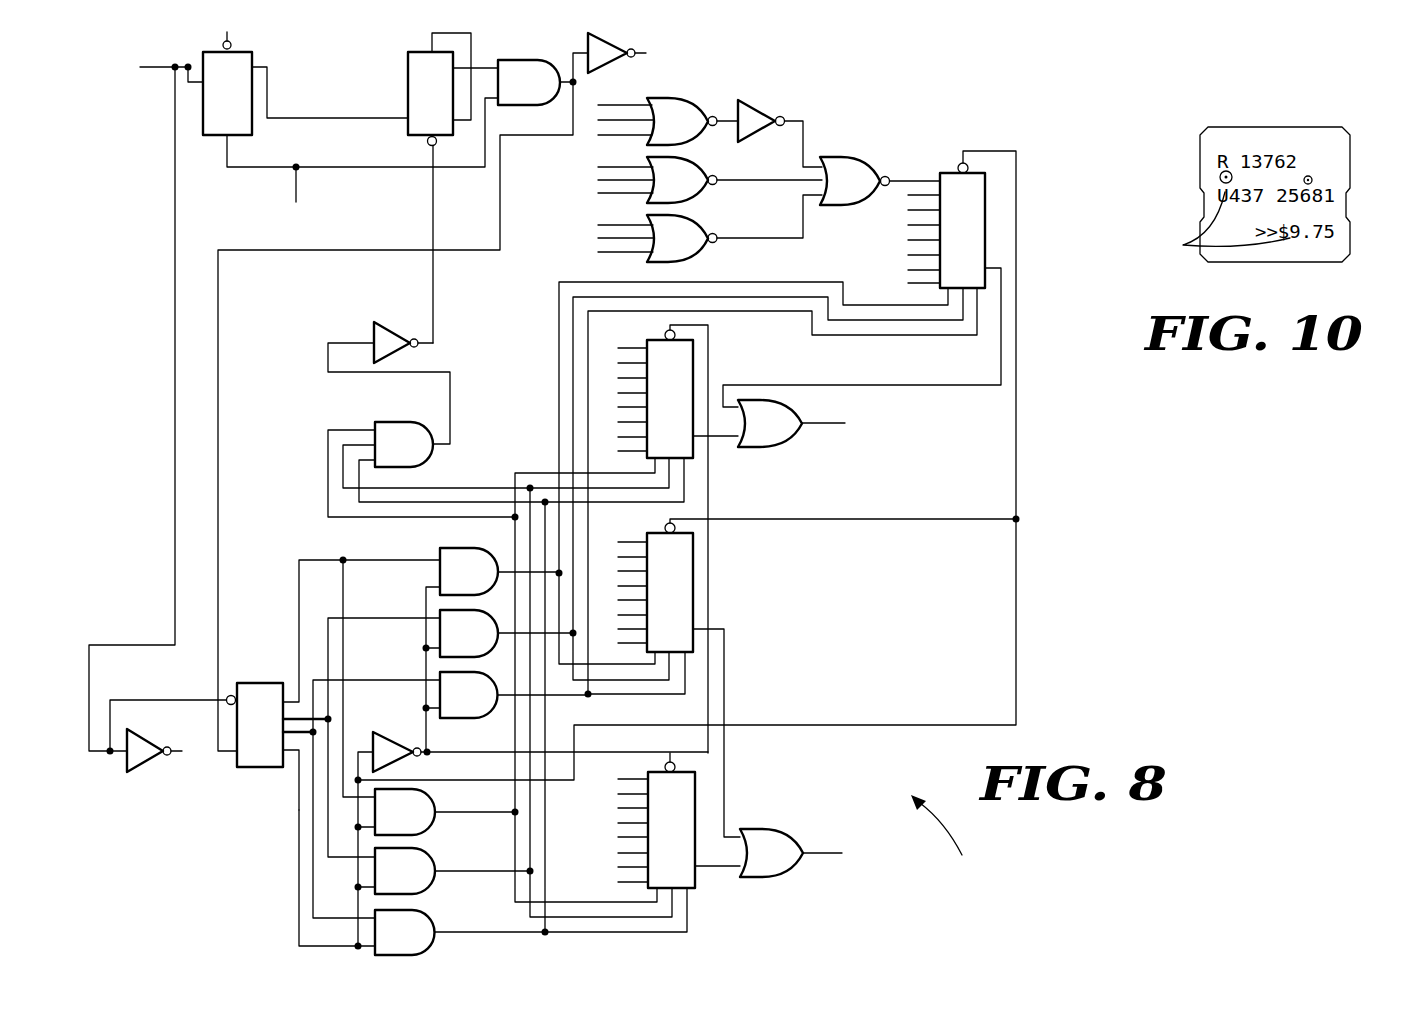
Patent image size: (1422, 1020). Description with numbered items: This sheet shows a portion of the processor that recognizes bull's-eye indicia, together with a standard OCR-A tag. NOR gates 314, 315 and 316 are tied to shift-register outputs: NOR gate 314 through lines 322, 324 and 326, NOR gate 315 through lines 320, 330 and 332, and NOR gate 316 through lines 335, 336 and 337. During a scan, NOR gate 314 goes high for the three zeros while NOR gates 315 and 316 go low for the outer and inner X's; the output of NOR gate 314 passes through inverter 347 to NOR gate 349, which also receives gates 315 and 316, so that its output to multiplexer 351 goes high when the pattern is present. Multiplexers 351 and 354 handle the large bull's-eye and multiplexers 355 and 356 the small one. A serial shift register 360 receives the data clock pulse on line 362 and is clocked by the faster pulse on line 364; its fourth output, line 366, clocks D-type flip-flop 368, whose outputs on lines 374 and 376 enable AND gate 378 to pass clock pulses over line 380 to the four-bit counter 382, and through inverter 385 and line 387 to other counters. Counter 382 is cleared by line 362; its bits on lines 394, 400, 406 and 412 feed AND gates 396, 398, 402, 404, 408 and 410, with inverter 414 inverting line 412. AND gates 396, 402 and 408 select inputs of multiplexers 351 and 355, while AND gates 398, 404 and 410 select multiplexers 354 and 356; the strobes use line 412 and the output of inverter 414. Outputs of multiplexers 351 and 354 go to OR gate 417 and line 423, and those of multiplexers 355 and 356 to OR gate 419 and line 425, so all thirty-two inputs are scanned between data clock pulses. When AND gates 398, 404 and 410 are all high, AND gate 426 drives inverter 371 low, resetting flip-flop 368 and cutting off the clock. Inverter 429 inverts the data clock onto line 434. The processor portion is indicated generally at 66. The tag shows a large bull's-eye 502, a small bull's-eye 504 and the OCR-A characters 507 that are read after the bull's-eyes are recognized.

In FIG. 8, the serial shift register 360 is at (216, 97).
In FIG. 8, the line 362 is at (152, 65).
In FIG. 8, the line 364 is at (297, 188).
In FIG. 8, the line 366 is at (317, 117).
In FIG. 8, the D-type flip-flop 368 is at (420, 97).
In FIG. 8, the inverter 371 is at (400, 323).
In FIG. 8, the line 374 is at (480, 67).
In FIG. 8, the line 376 is at (432, 33).
In FIG. 8, the AND gate 378 is at (514, 90).
In FIG. 8, the line 380 is at (567, 87).
In FIG. 8, the inverter 385 is at (622, 51).
In FIG. 8, the line 387 is at (642, 55).
In FIG. 8, the NOR gate 314 is at (665, 133).
In FIG. 8, the NOR gate 315 is at (665, 192).
In FIG. 8, the NOR gate 316 is at (665, 250).
In FIG. 8, the line 320 is at (607, 168).
In FIG. 8, the line 322 is at (608, 100).
In FIG. 8, the line 324 is at (607, 121).
In FIG. 8, the line 326 is at (615, 136).
In FIG. 8, the line 330 is at (607, 181).
In FIG. 8, the line 332 is at (636, 195).
In FIG. 8, the line 335 is at (610, 225).
In FIG. 8, the line 336 is at (612, 239).
In FIG. 8, the line 337 is at (620, 253).
In FIG. 8, the inverter 347 is at (762, 107).
In FIG. 8, the NOR gate 349 is at (838, 192).
In FIG. 8, the multiplexer 351 is at (952, 224).
In FIG. 8, the multiplexer 354 is at (659, 400).
In FIG. 8, the multiplexer 355 is at (659, 591).
In FIG. 8, the multiplexer 356 is at (660, 825).
In FIG. 8, the 4-bit counter 382 is at (249, 729).
In FIG. 8, the line 394 is at (318, 558).
In FIG. 8, the AND gate 396 is at (455, 580).
In FIG. 8, the AND gate 398 is at (391, 820).
In FIG. 8, the line 400 is at (307, 703).
In FIG. 8, the AND gate 402 is at (455, 642).
In FIG. 8, the AND gate 404 is at (391, 879).
In FIG. 8, the line 406 is at (303, 750).
In FIG. 8, the AND gate 408 is at (455, 703).
In FIG. 8, the AND gate 410 is at (391, 940).
In FIG. 8, the line 412 is at (298, 878).
In FIG. 8, the inverter 414 is at (393, 733).
In FIG. 8, the OR gate 417 is at (759, 431).
In FIG. 8, the OR gate 419 is at (761, 861).
In FIG. 8, the line 423 is at (818, 424).
In FIG. 8, the line 425 is at (823, 855).
In FIG. 8, the AND gate 426 is at (404, 444).
In FIG. 8, the inverter 429 is at (150, 770).
In FIG. 8, the line 434 is at (178, 752).
In FIG. 8, the control circuit 66 is at (941, 836).
In FIG. 10, the large bull's-eye 502 is at (1219, 180).
In FIG. 10, the small bull's-eye 504 is at (1313, 182).
In FIG. 10, the characters 507 is at (1219, 224).